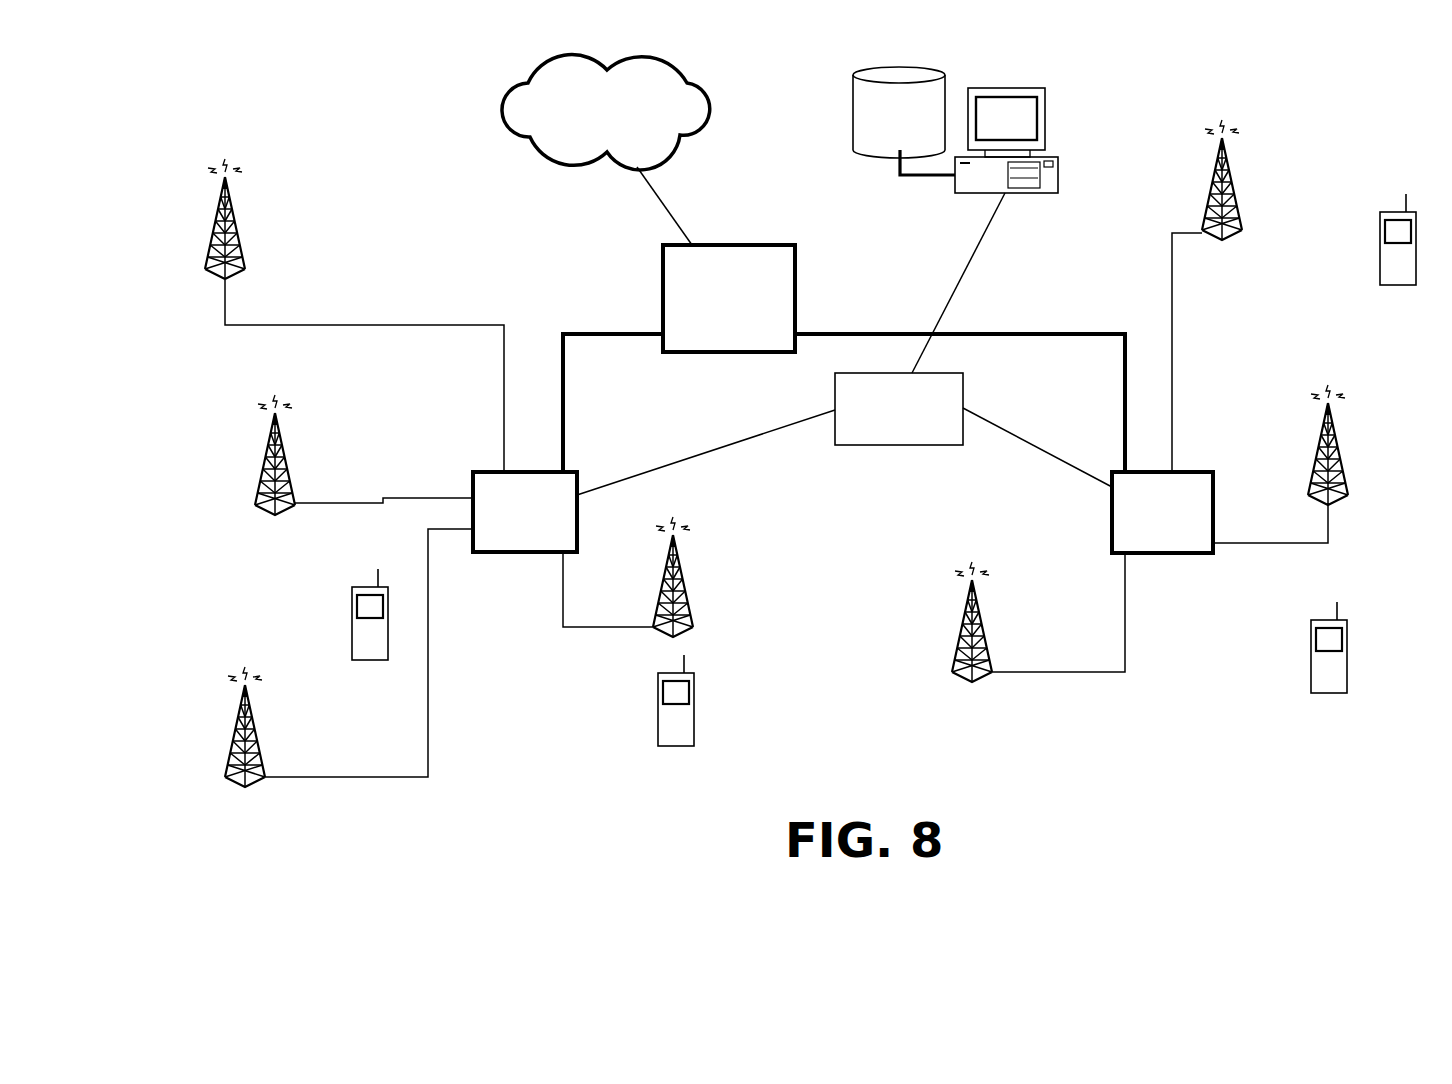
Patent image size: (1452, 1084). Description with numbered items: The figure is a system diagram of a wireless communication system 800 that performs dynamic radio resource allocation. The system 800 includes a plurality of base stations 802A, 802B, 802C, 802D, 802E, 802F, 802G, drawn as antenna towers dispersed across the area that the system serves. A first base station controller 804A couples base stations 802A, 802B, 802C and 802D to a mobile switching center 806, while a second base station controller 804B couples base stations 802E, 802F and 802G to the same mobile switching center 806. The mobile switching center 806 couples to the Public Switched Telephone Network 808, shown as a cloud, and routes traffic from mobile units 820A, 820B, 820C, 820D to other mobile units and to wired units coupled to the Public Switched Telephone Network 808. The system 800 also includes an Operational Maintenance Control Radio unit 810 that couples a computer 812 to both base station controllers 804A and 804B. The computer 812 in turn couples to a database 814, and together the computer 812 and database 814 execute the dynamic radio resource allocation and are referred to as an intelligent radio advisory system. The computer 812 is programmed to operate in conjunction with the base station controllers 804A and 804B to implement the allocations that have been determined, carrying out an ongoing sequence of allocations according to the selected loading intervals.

The wireless communication system 800 is at (523, 800).
The base station 802A is at (245, 270).
The base station 802B is at (275, 512).
The base station 802C is at (245, 786).
The base station 802D is at (695, 626).
The base station 802E is at (975, 682).
The base station 802F is at (1348, 497).
The base station 802G is at (1222, 242).
The base station controller 804A is at (481, 472).
The base station controller 804B is at (1112, 518).
The mobile switching center 806 is at (737, 245).
The Public Switched Telephone Network 808 is at (633, 58).
The Operational Maintenance Control Radio unit 810 is at (963, 386).
The computer 812 is at (1047, 109).
The database 814 is at (853, 92).
The mobile unit 820A is at (352, 640).
The mobile unit 820B is at (658, 730).
The mobile unit 820C is at (1311, 673).
The mobile unit 820D is at (1380, 266).